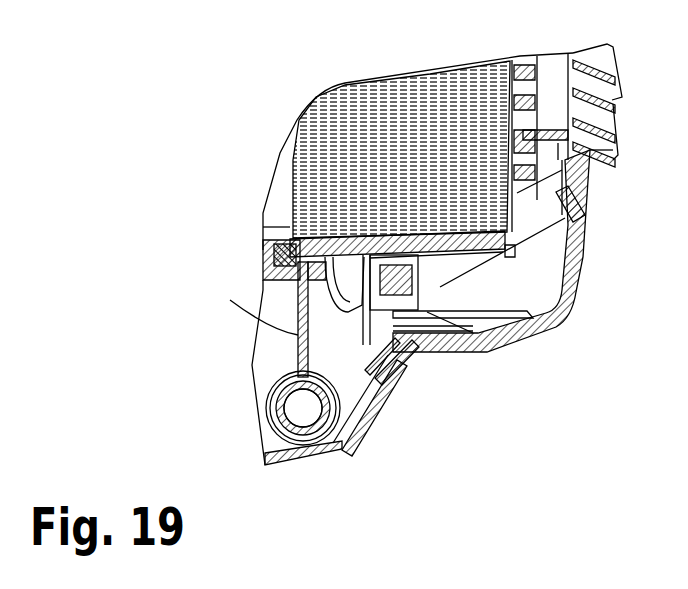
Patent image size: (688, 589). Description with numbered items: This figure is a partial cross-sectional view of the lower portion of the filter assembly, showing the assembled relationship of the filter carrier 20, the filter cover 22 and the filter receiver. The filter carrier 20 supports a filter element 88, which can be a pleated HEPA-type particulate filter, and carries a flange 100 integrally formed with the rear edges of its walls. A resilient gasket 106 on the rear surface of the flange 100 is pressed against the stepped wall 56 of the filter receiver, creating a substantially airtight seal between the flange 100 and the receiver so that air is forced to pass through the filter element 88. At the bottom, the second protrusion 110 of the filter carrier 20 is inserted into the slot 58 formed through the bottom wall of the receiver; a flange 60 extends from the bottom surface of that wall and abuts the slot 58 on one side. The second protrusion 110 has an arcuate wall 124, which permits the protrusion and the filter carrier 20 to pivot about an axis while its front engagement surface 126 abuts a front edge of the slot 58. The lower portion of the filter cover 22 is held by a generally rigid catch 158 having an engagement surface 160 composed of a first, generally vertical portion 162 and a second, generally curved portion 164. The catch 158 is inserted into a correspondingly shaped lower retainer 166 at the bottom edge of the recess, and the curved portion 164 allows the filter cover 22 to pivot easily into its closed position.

The filter carrier 20 is at (507, 257).
The filter cover 22 is at (582, 285).
The stepped wall 56 is at (290, 240).
The slot 58 is at (298, 315).
The flange 60 is at (343, 425).
The filter element 88 is at (378, 120).
The flange 100 is at (300, 290).
The resilient gasket 106 is at (268, 247).
The second protrusion 110 is at (370, 374).
The arcuate wall 124 is at (355, 321).
The front engagement surface 126 is at (505, 340).
The catch 158 is at (460, 352).
The engagement surface 160 is at (451, 452).
The first, generally vertical portion 162 is at (425, 362).
The second, generally curved portion 164 is at (415, 360).
The lower retainer 166 is at (420, 357).